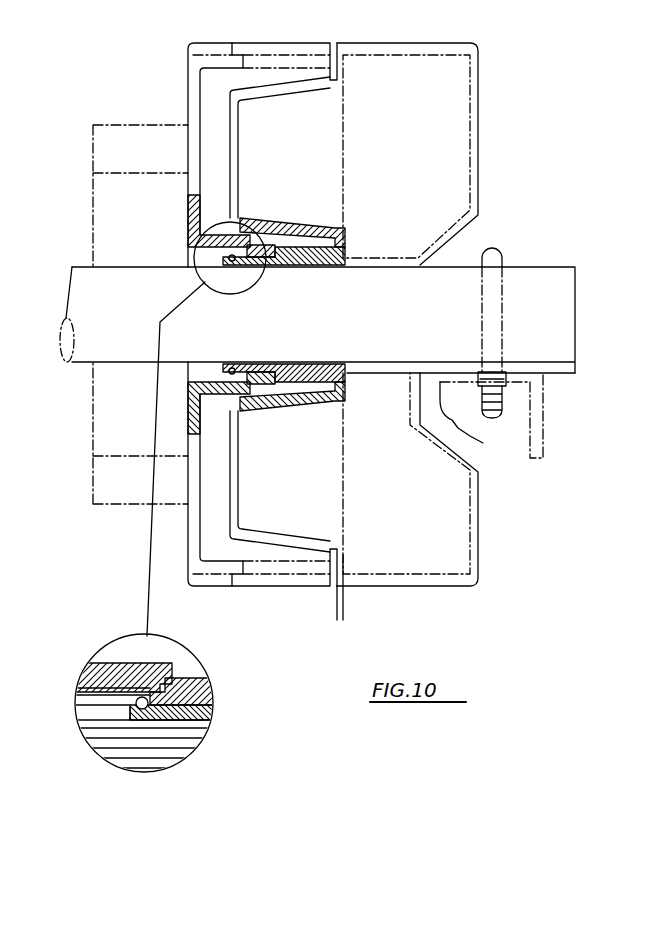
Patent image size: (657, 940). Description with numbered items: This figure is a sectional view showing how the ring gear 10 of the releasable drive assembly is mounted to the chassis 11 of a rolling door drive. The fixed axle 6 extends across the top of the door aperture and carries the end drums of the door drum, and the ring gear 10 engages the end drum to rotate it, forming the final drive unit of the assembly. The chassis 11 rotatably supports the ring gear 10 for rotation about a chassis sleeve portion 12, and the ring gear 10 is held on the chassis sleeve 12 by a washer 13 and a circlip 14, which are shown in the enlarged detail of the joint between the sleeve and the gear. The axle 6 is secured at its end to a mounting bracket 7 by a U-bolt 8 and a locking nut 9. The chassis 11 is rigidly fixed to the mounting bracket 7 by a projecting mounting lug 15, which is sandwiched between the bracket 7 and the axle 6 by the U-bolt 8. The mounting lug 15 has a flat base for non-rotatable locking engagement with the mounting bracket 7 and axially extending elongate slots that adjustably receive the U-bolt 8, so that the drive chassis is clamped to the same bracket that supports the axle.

The fixed axle 6 is at (83, 287).
The mounting bracket 7 is at (495, 447).
The U-bolt 8 is at (493, 263).
The locking nut 9 is at (512, 383).
The ring gear 10 is at (248, 47).
The chassis 11 is at (325, 150).
The chassis sleeve portion 12 is at (300, 370).
The washer 13 is at (163, 692).
The circlip 14 is at (137, 702).
The mounting lug 15 is at (555, 368).